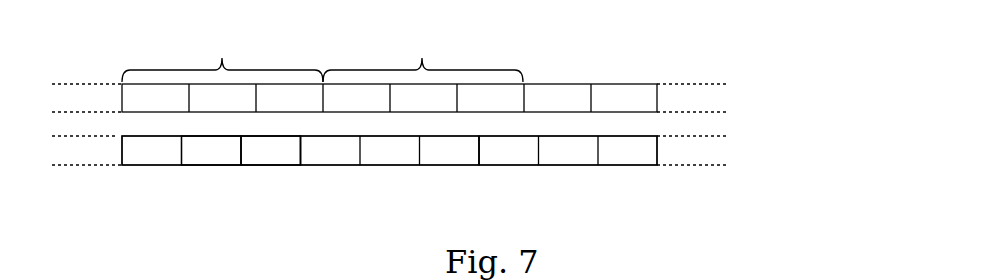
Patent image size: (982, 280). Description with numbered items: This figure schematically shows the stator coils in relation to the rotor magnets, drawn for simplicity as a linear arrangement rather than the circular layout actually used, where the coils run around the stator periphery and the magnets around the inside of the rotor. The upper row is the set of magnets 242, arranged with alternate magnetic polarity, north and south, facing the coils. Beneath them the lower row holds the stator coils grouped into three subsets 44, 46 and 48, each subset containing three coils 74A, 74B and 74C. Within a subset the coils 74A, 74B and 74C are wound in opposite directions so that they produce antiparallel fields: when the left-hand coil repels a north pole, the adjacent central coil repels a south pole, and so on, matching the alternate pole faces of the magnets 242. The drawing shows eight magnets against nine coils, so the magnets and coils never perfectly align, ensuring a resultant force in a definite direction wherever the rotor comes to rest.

The magnets 242 is at (603, 62).
The coil 74A is at (127, 148).
The coil 74B is at (212, 146).
The coil 74C is at (272, 146).
The coil subset 44 is at (300, 168).
The coil subset 46 is at (479, 168).
The coil subset 48 is at (657, 168).